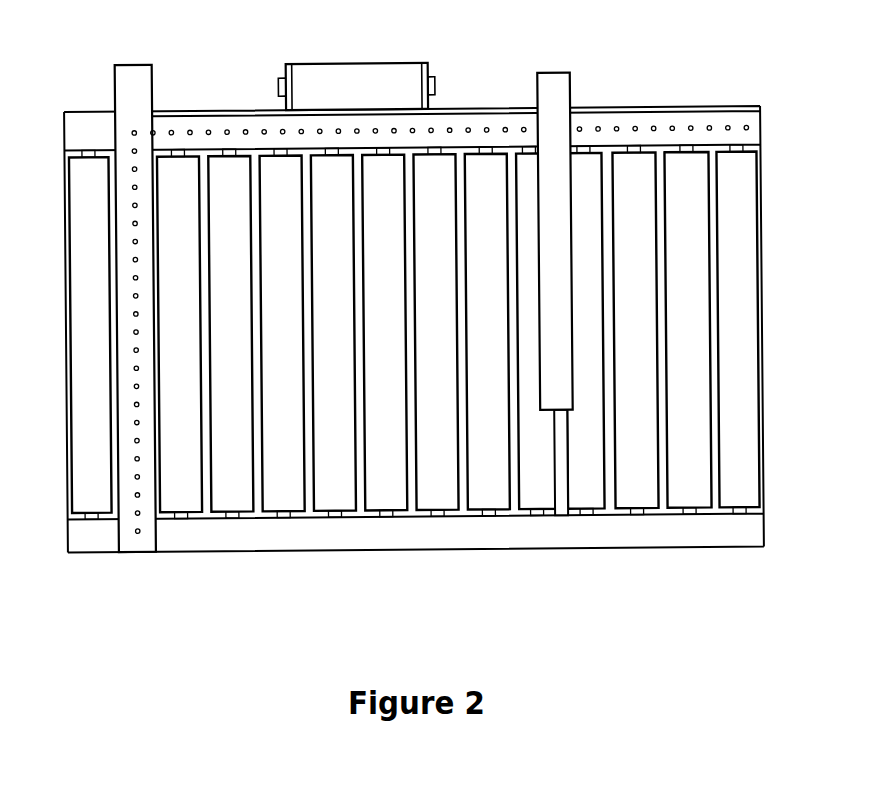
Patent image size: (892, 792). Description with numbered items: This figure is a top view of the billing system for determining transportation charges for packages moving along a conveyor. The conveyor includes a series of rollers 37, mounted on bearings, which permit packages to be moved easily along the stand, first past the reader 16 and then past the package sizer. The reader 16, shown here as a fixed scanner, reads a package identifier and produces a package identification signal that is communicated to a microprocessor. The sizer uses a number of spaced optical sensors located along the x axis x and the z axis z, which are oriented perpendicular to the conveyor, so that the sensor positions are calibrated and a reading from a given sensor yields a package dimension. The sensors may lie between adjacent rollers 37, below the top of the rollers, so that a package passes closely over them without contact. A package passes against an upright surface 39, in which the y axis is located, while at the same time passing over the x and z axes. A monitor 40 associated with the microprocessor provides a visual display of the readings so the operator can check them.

The upright surface 39 is at (755, 105).
The rollers 37 is at (748, 445).
The z axis z is at (128, 328).
The x axis x is at (208, 128).
The reader 16 is at (567, 368).
The monitor 40 is at (395, 75).